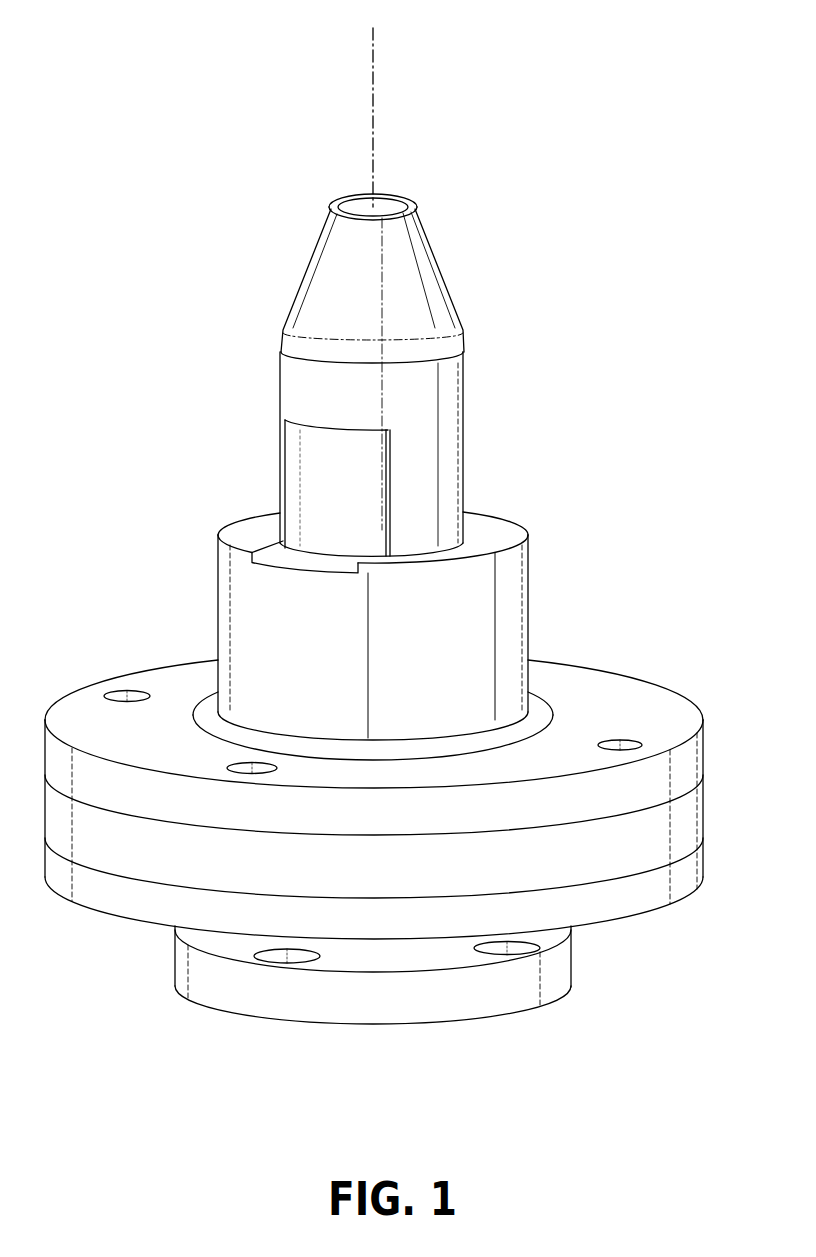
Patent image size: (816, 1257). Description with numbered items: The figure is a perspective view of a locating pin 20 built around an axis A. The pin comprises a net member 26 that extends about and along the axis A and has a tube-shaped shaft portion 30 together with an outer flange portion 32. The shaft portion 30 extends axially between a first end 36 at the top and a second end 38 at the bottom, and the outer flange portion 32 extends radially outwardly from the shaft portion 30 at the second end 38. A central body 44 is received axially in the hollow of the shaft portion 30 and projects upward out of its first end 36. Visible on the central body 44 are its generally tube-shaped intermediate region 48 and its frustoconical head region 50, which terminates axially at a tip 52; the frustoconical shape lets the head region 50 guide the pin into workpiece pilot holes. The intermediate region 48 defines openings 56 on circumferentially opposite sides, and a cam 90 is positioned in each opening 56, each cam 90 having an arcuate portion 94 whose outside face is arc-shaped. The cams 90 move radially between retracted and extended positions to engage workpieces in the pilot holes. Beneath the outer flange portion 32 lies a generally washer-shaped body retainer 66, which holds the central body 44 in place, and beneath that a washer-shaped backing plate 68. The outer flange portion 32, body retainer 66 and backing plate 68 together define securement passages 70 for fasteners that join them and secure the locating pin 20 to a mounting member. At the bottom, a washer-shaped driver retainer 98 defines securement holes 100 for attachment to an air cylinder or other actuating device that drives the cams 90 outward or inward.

The axis A is at (371, 114).
The locating pin 20 is at (697, 502).
The net member 26 is at (528, 598).
The shaft portion 30 is at (517, 610).
The outer flange portion 32 is at (637, 697).
The first end 36 is at (235, 523).
The second end 38 is at (218, 690).
The central body 44 is at (468, 350).
The intermediate region 48 is at (452, 412).
The head region 50 is at (425, 270).
The tip 52 is at (393, 196).
The openings 56 is at (315, 428).
The body retainer 66 is at (705, 810).
The backing plate 68 is at (690, 893).
The securement passages 70 is at (108, 690).
The cams 90 is at (330, 525).
The arcuate portion 94 is at (310, 470).
The driver retainer 98 is at (555, 1003).
The securement holes 100 is at (528, 948).